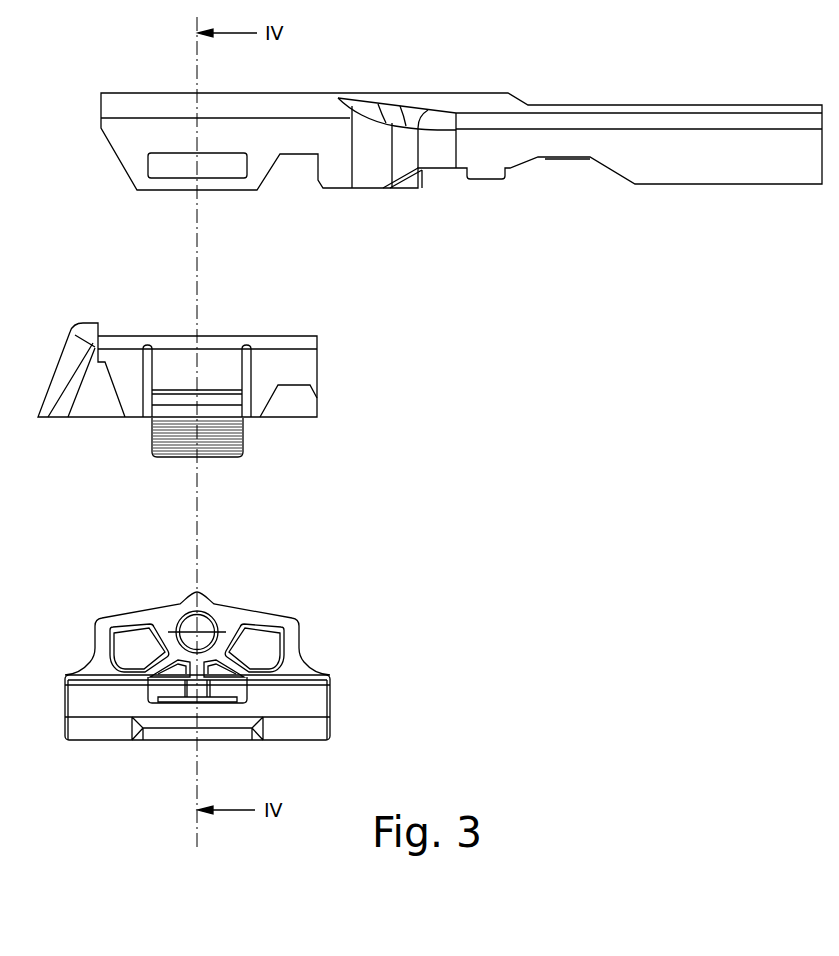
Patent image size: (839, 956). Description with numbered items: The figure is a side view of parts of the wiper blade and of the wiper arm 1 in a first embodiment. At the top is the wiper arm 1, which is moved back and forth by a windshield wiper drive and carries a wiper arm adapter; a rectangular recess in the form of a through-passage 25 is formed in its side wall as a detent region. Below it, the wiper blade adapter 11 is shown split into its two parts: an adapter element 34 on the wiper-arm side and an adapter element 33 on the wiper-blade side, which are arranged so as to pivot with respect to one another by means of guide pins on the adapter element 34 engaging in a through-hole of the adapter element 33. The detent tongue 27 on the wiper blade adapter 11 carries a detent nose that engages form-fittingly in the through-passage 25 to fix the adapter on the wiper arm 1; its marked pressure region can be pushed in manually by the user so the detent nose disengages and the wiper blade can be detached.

The wiper arm 1 is at (461, 129).
The wiper blade adapter 11 is at (425, 520).
The through-passage 25 is at (220, 170).
The detent tongue 27 is at (152, 440).
The adapter element on the wiper-blade side 33 is at (305, 702).
The adapter element on the wiper-arm side 34 is at (297, 373).